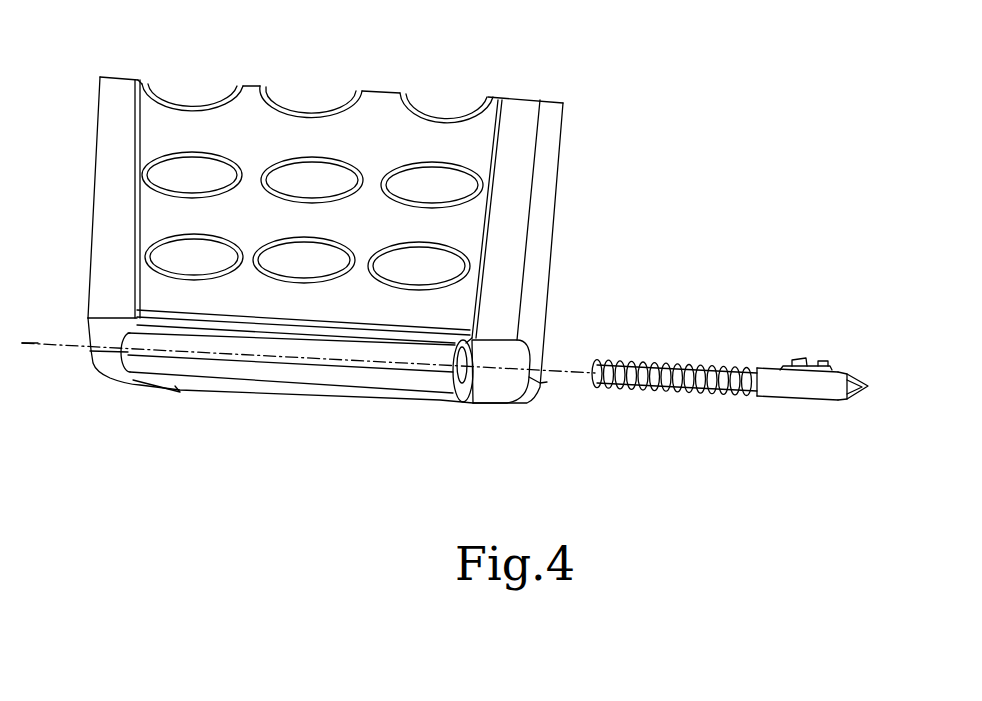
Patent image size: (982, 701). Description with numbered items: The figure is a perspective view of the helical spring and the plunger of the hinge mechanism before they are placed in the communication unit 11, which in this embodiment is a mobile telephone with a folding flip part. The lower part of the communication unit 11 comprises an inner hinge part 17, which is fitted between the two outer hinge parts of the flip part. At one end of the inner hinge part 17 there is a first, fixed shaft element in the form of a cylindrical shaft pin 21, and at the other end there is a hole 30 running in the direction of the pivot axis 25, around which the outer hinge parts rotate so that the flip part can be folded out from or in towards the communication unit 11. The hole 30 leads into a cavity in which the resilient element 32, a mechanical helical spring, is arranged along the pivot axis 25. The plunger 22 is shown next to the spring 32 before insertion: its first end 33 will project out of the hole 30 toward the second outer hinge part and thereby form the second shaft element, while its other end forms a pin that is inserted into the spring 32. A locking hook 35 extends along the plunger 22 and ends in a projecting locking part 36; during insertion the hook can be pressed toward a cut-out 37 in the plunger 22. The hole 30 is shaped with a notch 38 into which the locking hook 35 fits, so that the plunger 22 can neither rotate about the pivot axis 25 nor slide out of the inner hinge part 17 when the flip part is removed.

The communication unit 11 is at (565, 167).
The inner hinge part 17 is at (320, 378).
The shaft pin 21 is at (130, 350).
The plunger 22 is at (783, 397).
The pivot axis 25 is at (30, 334).
The hole 30 is at (460, 388).
The resilient element 32 is at (680, 392).
The first end of the plunger 33 is at (840, 401).
The locking hook 35 is at (822, 363).
The projecting locking part 36 is at (797, 362).
The cut-out 37 is at (786, 369).
The notch 38 is at (476, 339).